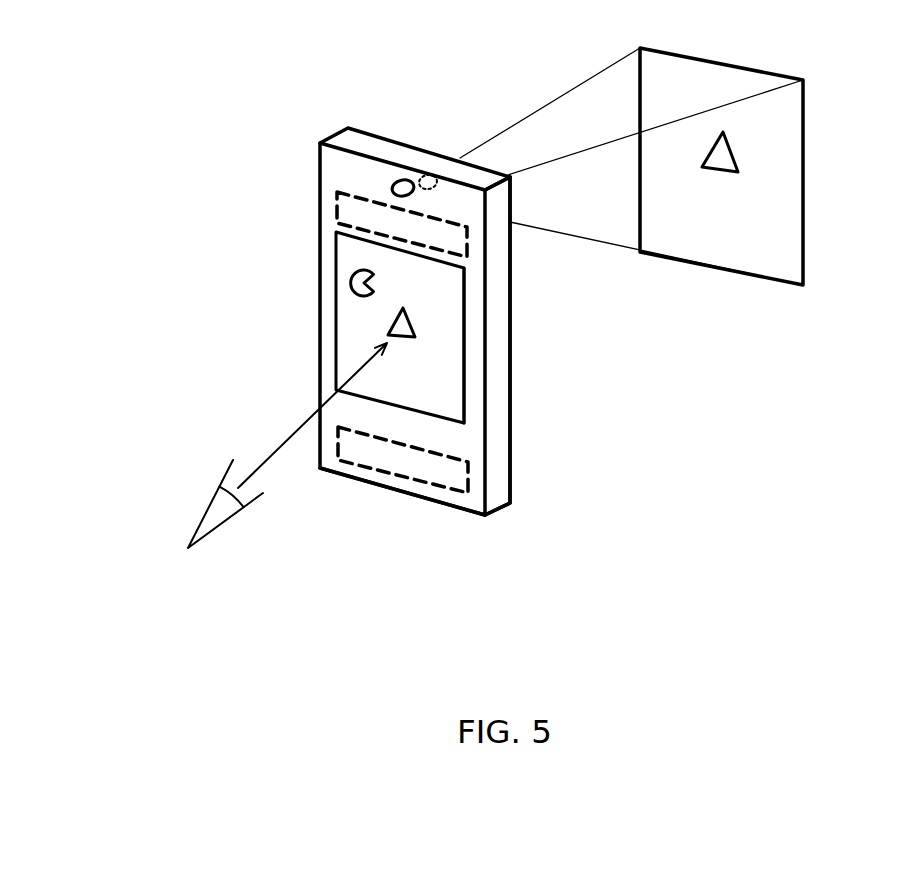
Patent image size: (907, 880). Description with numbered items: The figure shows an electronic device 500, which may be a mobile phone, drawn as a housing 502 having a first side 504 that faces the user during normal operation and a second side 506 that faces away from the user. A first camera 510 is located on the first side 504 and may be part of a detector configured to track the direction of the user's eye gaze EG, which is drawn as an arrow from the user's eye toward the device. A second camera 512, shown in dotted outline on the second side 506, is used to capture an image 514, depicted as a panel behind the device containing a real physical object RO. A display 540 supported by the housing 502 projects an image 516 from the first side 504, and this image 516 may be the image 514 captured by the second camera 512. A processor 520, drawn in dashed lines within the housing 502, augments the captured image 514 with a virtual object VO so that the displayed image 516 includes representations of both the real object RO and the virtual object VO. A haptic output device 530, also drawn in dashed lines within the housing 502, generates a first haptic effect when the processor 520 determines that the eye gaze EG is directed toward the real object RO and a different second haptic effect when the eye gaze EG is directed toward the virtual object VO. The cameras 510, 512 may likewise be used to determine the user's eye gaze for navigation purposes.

The electronic device 500 is at (125, 114).
The housing 502 is at (301, 187).
The first side 504 is at (472, 503).
The second side 506 is at (519, 465).
The first camera 510 is at (407, 181).
The second camera 512 is at (441, 172).
The image 514 is at (794, 263).
The image 516 is at (456, 402).
The processor 520 is at (338, 212).
The haptic output device 530 is at (413, 480).
The display 540 is at (467, 358).
The real object RO is at (737, 158).
The virtual object VO is at (350, 290).
The eye gaze EG is at (277, 447).